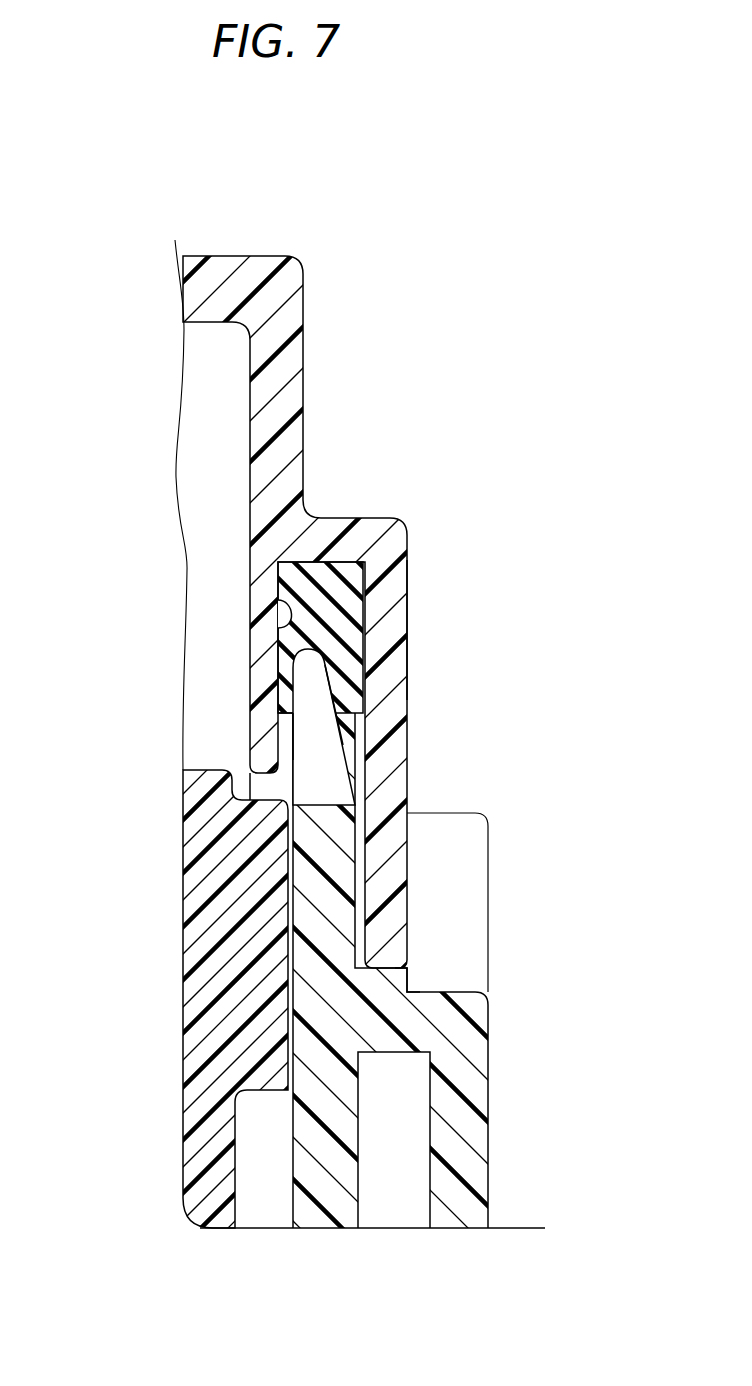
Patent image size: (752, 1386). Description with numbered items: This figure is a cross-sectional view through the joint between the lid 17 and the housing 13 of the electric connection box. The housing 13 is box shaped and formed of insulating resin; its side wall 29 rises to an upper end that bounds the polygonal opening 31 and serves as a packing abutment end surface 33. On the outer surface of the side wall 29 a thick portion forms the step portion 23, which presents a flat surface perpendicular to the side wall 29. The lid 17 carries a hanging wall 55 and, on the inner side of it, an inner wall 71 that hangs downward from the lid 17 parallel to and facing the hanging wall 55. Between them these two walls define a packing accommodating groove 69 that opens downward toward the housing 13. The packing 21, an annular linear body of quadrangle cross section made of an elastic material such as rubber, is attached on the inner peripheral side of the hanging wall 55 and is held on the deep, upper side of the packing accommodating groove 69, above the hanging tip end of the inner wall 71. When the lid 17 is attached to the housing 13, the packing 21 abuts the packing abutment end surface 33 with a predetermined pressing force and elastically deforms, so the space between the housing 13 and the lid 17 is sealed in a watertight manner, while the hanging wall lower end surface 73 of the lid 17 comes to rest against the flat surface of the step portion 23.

The housing 13 is at (492, 1104).
The lid 17 is at (312, 300).
The packing 21 is at (323, 605).
The step portion 23 is at (410, 987).
The side wall 29 is at (352, 803).
The opening 31 is at (290, 750).
The packing abutment end surface 33 is at (297, 670).
The hanging wall 55 is at (408, 623).
The packing accommodating groove 69 is at (278, 640).
The inner wall 71 is at (262, 708).
The hanging wall lower end surface 73 is at (412, 988).